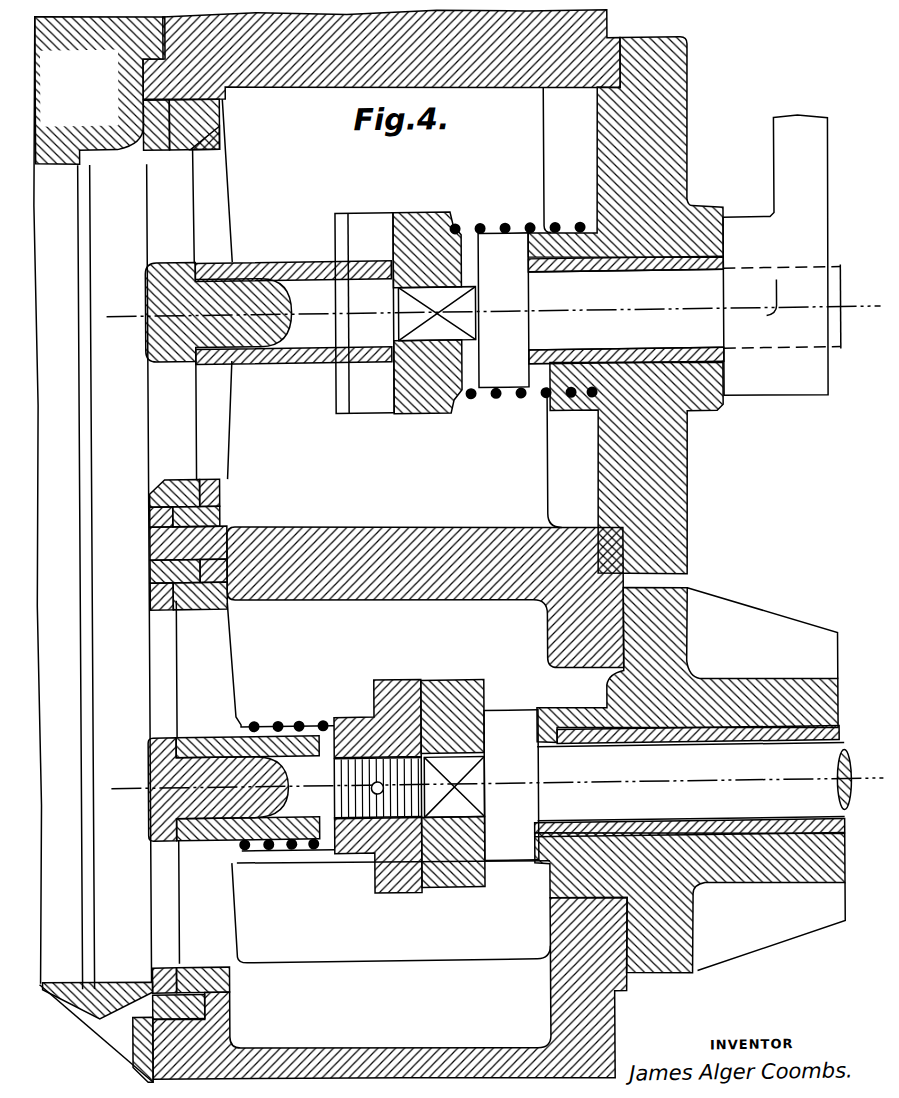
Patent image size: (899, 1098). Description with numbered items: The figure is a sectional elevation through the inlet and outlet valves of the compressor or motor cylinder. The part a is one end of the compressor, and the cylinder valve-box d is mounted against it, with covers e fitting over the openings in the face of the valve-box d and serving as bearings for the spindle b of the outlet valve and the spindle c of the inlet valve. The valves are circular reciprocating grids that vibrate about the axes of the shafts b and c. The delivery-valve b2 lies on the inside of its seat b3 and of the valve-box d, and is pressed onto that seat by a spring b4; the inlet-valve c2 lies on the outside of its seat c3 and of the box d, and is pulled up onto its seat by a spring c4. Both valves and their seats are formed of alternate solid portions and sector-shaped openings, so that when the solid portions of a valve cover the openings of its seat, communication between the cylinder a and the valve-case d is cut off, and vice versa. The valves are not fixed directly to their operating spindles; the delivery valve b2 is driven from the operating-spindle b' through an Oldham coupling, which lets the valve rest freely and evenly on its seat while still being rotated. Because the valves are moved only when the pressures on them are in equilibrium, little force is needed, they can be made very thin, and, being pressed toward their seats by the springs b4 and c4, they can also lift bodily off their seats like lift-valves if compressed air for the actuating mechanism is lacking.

The compressor end a is at (70, 160).
The upper frame plate d' is at (382, 63).
The cylinder valve-box d is at (401, 990).
The covers e is at (672, 123).
The outlet-valve spindle b is at (493, 312).
The operating-spindle b' is at (781, 256).
The delivery-valve b2 is at (216, 210).
The delivery-valve seat b3 is at (168, 139).
The spring b4 is at (532, 223).
The inlet-valve spindle c is at (497, 783).
The inlet-valve c2 is at (156, 653).
The inlet-valve seat c3 is at (213, 667).
The spring c4 is at (298, 722).